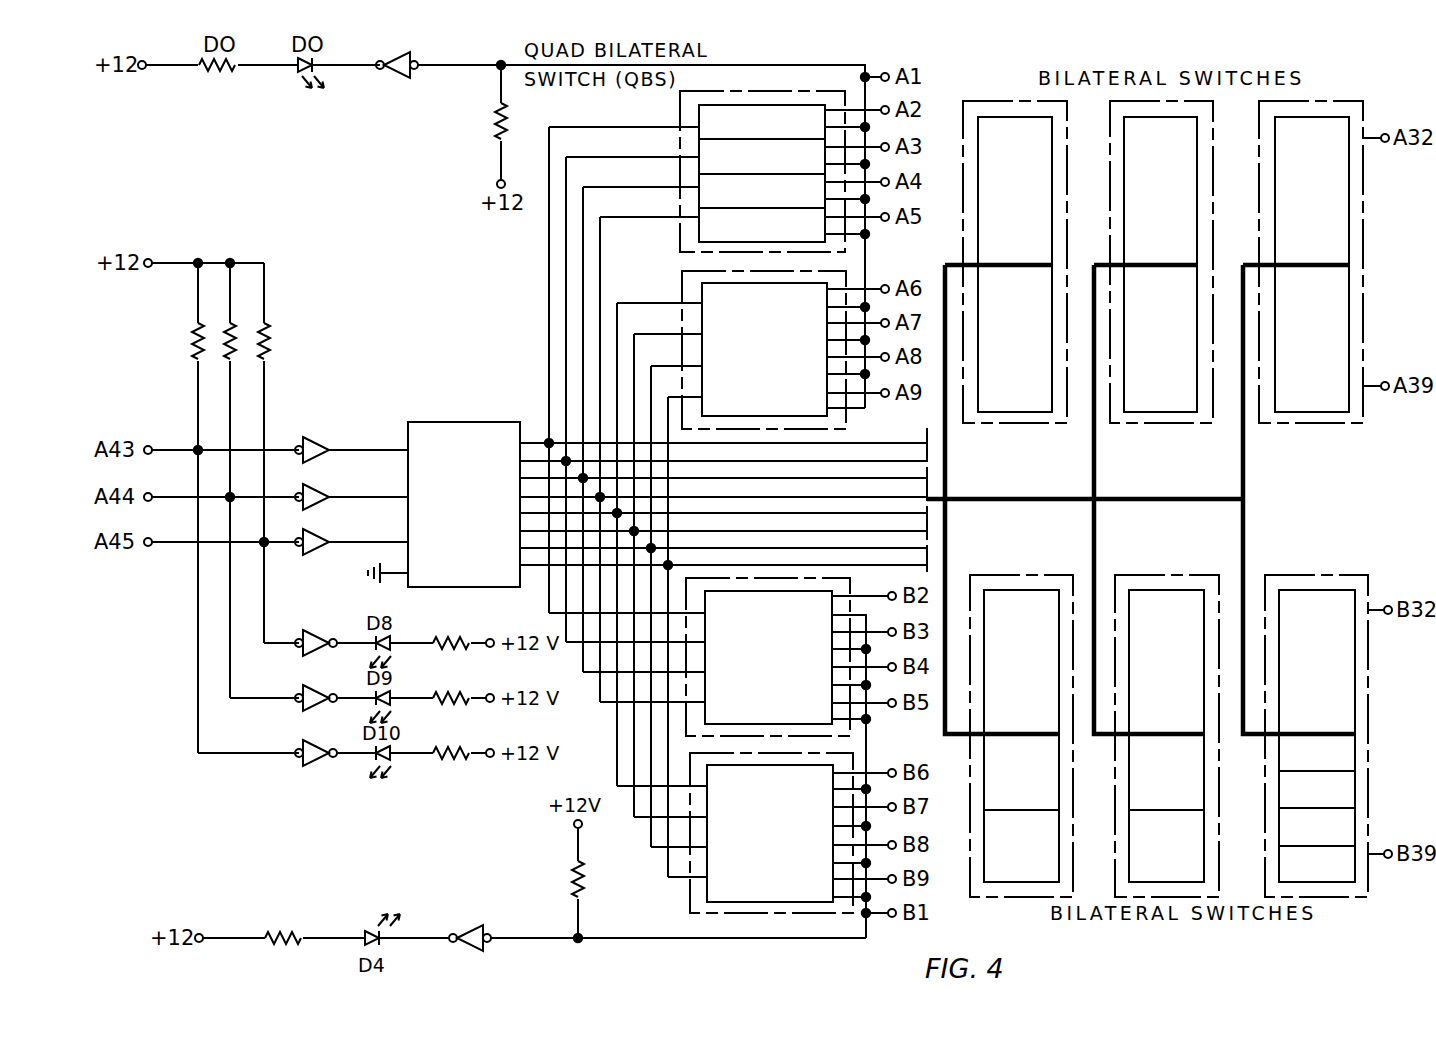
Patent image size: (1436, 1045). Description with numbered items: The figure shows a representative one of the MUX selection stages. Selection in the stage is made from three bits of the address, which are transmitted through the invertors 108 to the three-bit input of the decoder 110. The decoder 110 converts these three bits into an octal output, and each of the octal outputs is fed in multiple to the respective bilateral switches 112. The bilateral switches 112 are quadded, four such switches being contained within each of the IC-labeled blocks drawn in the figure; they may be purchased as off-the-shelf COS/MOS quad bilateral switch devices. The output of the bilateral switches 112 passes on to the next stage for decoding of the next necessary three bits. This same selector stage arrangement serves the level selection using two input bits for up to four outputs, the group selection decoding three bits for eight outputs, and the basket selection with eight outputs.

The invertors 108 is at (311, 437).
The decoder 110 is at (438, 421).
The bilateral switches 112 is at (1036, 502).